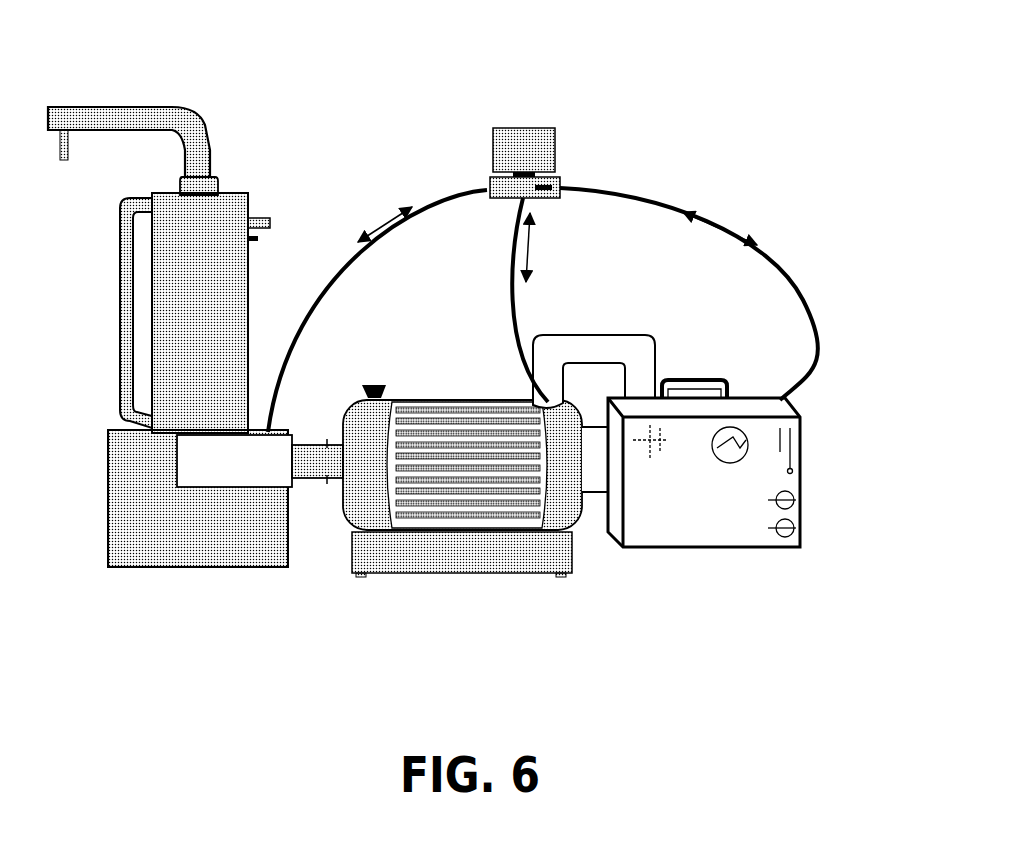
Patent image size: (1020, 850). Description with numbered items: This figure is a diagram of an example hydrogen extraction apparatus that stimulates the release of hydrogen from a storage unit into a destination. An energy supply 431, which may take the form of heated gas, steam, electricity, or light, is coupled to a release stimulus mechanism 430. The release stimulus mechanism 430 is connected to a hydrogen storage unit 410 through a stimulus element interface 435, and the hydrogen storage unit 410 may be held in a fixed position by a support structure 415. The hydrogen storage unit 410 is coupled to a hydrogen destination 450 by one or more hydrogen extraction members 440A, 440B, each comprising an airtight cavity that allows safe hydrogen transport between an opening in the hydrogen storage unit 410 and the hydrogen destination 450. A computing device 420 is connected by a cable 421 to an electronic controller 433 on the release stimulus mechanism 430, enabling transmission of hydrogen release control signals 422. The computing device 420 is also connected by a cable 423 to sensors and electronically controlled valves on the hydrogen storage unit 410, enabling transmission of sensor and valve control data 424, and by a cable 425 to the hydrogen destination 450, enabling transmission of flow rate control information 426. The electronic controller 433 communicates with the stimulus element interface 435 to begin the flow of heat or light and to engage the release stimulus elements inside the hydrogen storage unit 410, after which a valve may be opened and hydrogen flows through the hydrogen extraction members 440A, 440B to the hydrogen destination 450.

The hydrogen storage unit 410 is at (418, 400).
The support structure 415 is at (393, 573).
The computing device 420 is at (525, 128).
The cable 421 is at (377, 311).
The hydrogen release control signals 422 is at (388, 215).
The cable 423 is at (504, 300).
The sensor and/or valve control data 424 is at (537, 240).
The cable 425 is at (689, 288).
The flow rate control information 426 is at (715, 215).
The release stimulus mechanism 430 is at (205, 409).
The energy supply 431 is at (171, 107).
The electronic controller 433 is at (234, 461).
The stimulus element interface 435 is at (313, 463).
The hydrogen extraction member 440A is at (562, 347).
The hydrogen extraction member 440B is at (592, 465).
The hydrogen destination 450 is at (704, 491).